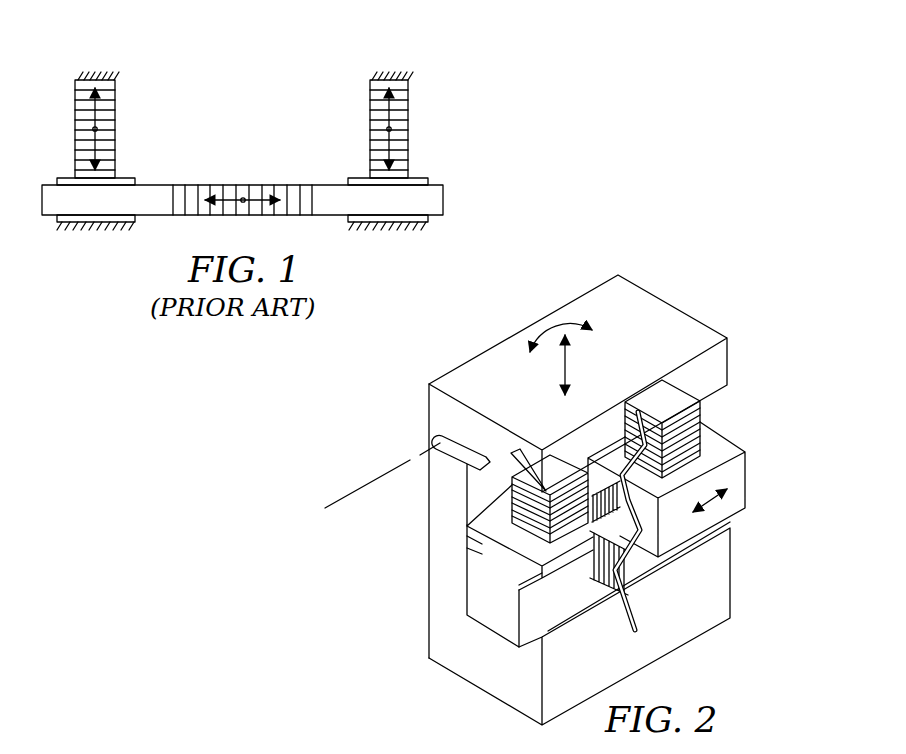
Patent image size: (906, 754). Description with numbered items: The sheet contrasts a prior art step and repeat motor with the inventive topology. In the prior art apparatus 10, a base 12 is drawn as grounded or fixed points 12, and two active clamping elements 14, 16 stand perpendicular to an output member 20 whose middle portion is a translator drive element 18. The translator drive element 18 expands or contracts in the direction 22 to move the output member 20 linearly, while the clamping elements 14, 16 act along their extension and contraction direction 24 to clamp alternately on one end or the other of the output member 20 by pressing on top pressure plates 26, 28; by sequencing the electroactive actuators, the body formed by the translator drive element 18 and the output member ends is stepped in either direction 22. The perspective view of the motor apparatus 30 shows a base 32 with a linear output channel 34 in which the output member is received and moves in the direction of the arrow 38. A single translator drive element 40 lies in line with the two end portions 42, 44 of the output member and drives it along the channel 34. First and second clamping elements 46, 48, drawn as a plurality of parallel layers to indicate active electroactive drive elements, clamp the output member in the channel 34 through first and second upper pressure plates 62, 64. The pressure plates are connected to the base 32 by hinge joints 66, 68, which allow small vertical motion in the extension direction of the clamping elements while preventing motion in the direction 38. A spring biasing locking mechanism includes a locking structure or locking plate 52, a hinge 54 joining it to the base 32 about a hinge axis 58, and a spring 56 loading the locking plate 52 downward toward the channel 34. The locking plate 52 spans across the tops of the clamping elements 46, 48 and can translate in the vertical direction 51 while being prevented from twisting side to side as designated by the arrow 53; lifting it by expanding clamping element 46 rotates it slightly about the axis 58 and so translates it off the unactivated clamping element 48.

In FIG. 1, the step and repeat motor apparatus 10 is at (240, 44).
In FIG. 1, the base 12 is at (97, 72).
In FIG. 1, the clamping element 14 is at (115, 103).
In FIG. 1, the clamping element 16 is at (370, 127).
In FIG. 1, the translator drive element 18 is at (193, 185).
In FIG. 1, the output member 20 is at (45, 202).
In FIG. 1, the direction of motion 22 is at (250, 200).
In FIG. 1, the extension/contraction direction 24 is at (95, 115).
In FIG. 1, the top pressure plate 26 is at (126, 170).
In FIG. 1, the top pressure plate 28 is at (355, 178).
In FIG. 2, the step and repeat motor apparatus 30 is at (752, 365).
In FIG. 2, the base 32 is at (725, 608).
In FIG. 2, the linear output channel 34 is at (515, 548).
In FIG. 2, the direction arrow 38 is at (745, 515).
In FIG. 2, the translator drive element 40 is at (607, 583).
In FIG. 2, the end portion of output member 42 is at (485, 607).
In FIG. 2, the end portion of output member 44 is at (745, 468).
In FIG. 2, the first clamping element 46 is at (515, 497).
In FIG. 2, the second clamping element 48 is at (706, 412).
In FIG. 2, the vertical direction 51 is at (565, 372).
In FIG. 2, the locking structure 52 is at (700, 325).
In FIG. 2, the rotational arrow 53 is at (592, 318).
In FIG. 2, the hinge 54 is at (455, 440).
In FIG. 2, the spring 56 is at (652, 577).
In FIG. 2, the hinge axis 58 is at (357, 490).
In FIG. 2, the first upper pressure plate 62 is at (510, 580).
In FIG. 2, the second upper pressure plate 64 is at (718, 452).
In FIG. 2, the hinge joint 66 is at (480, 540).
In FIG. 2, the hinge joint 68 is at (600, 465).